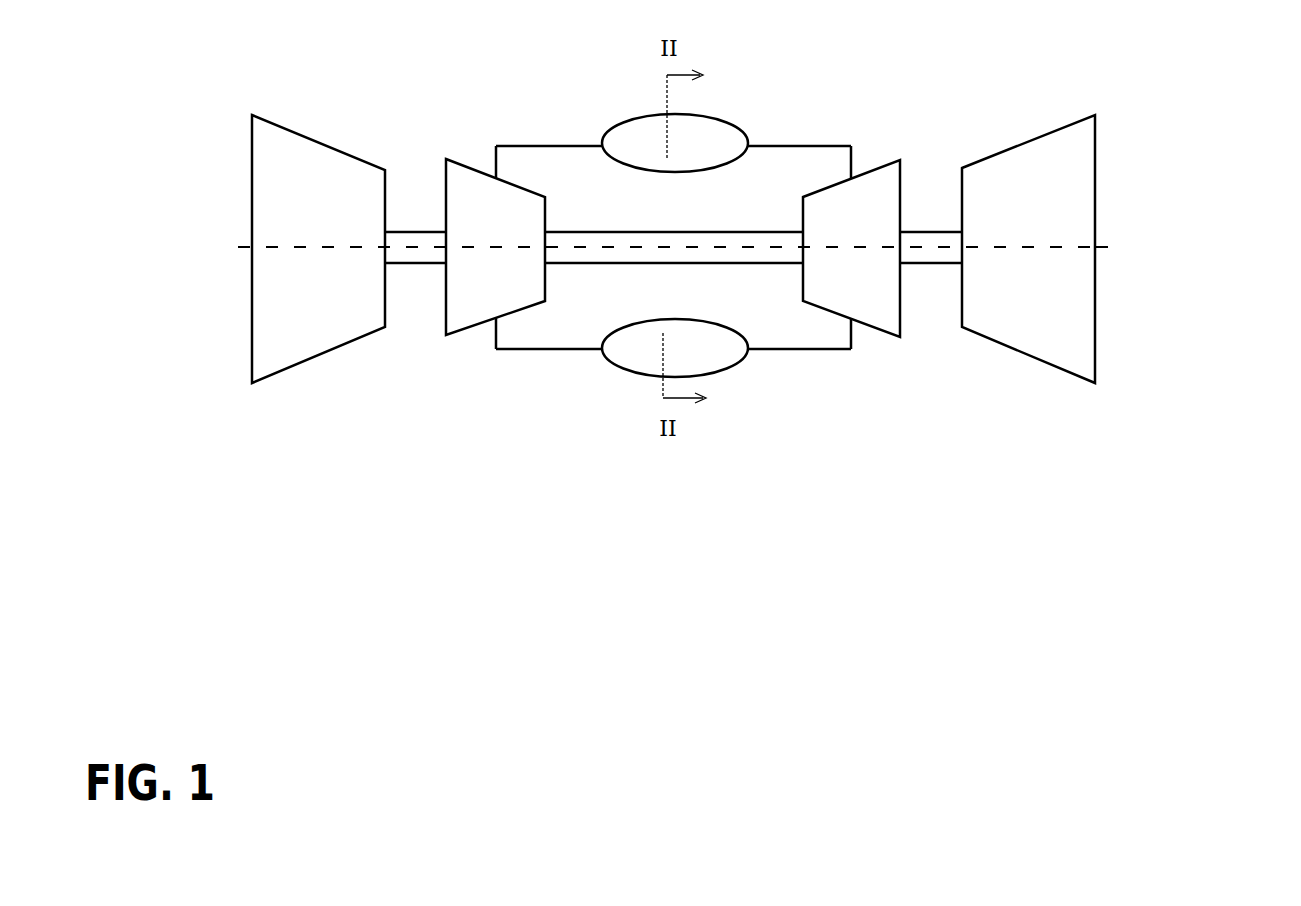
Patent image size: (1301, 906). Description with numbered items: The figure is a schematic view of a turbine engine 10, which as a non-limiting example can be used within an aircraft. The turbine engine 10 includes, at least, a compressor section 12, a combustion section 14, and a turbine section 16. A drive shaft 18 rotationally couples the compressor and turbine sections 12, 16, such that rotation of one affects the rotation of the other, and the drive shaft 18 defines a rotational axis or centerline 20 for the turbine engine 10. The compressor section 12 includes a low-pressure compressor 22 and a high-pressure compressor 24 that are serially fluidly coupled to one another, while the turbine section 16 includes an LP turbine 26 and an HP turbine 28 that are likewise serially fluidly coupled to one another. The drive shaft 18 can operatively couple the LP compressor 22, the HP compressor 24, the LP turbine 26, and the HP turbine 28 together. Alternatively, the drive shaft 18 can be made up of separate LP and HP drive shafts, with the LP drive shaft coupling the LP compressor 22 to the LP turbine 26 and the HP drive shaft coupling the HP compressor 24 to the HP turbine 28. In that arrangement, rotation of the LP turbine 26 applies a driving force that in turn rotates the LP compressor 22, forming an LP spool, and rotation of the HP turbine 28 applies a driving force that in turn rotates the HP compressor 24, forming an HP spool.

The turbine engine 10 is at (1246, 127).
The compressor section 12 is at (342, 110).
The combustion section 14 is at (633, 375).
The turbine section 16 is at (1013, 112).
The drive shaft 18 is at (673, 232).
The centerline 20 is at (1102, 246).
The low-pressure compressor 22 is at (355, 153).
The high-pressure compressor 24 is at (450, 334).
The LP turbine 26 is at (902, 188).
The HP turbine 28 is at (1095, 163).